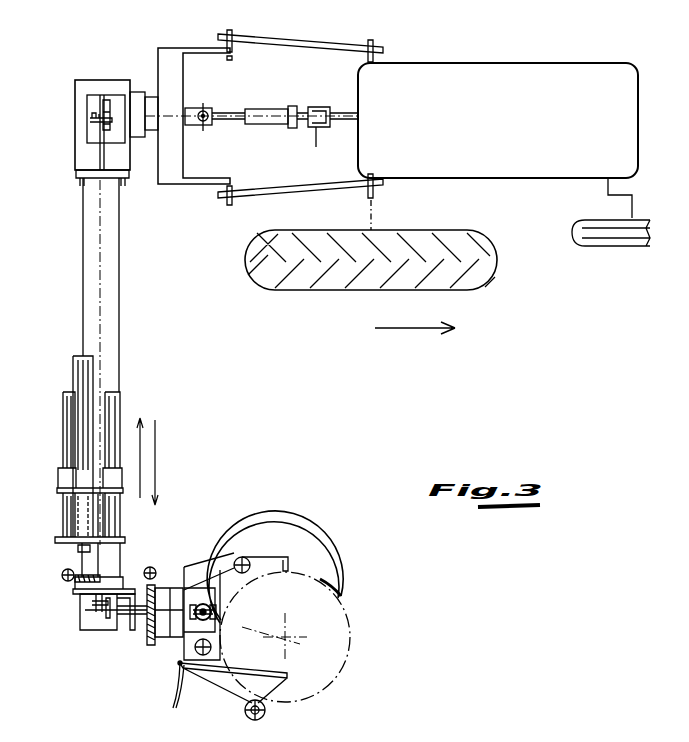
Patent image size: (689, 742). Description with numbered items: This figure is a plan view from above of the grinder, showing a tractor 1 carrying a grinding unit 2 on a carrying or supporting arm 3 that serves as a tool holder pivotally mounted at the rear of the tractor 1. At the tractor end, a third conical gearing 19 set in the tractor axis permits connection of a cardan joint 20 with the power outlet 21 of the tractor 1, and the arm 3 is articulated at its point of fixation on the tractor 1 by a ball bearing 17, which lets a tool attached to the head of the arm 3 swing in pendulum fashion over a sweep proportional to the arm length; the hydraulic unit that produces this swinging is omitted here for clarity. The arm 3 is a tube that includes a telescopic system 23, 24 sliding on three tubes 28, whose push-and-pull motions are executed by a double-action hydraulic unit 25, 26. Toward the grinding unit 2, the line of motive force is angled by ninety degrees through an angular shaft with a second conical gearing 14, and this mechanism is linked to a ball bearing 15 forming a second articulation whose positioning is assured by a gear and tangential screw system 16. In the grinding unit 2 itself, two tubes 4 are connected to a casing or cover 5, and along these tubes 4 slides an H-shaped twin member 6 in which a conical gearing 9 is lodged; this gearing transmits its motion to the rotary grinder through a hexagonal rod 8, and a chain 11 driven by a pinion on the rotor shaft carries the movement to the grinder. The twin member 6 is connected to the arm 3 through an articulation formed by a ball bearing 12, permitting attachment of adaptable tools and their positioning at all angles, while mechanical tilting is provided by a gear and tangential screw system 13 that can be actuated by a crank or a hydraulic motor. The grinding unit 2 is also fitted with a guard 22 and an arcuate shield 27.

The tractor 1 is at (476, 82).
The grinding unit 2 is at (343, 649).
The carrying arm 3 is at (93, 258).
The tubes 4 is at (241, 557).
The casing or cover 5 is at (270, 557).
The H-shaped twin member 6 is at (197, 594).
The hexagonal rod 8 is at (252, 610).
The conical gearing 9 is at (213, 620).
The chain 11 is at (266, 713).
The ball bearing 12 is at (163, 636).
The gear and tangential screw system 13 is at (153, 573).
The second conical gearing 14 is at (108, 625).
The ball bearing 15 is at (120, 578).
The gear and tangential screw system 16 is at (70, 572).
The ball bearing 17 is at (137, 92).
The third conical gearing 19 is at (108, 116).
The cardan joint 20 is at (262, 112).
The power outlet 21 is at (340, 114).
The guard 22 is at (176, 697).
The telescopic system 23 is at (120, 493).
The telescopic system 24 is at (58, 538).
The double-action hydraulic unit 25 is at (83, 379).
The double-action hydraulic unit 26 is at (60, 493).
The arcuate shield 27 is at (330, 586).
The tubes 28 is at (113, 404).